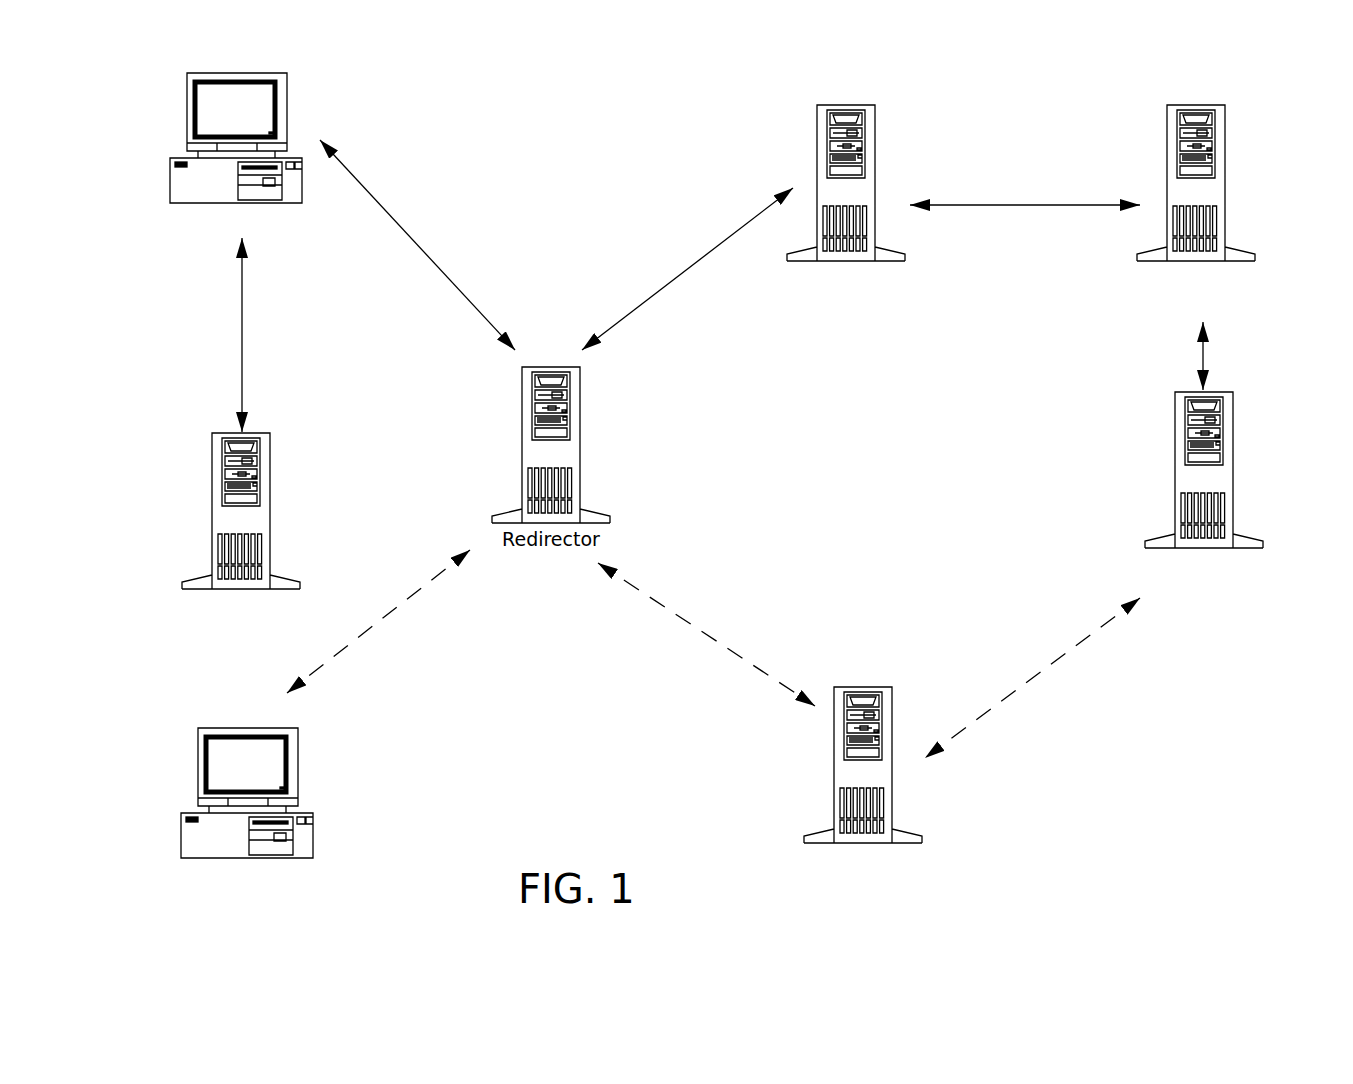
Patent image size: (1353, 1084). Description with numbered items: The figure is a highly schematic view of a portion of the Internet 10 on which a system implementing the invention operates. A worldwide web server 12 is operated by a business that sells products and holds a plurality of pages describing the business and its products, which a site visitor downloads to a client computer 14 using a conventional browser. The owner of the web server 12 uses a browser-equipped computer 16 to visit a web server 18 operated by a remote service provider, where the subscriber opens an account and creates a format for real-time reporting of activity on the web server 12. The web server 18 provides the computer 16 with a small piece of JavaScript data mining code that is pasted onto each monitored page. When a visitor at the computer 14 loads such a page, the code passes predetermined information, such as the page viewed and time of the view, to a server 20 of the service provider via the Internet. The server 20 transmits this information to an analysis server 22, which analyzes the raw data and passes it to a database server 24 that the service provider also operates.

The portion of the Internet 10 is at (549, 150).
The worldwide web server 12 is at (272, 497).
The computer 14 is at (170, 168).
The computer 16 is at (315, 818).
The web server 18 is at (833, 765).
The server 20 is at (877, 150).
The analysis server 22 is at (1163, 185).
The database server 24 is at (1172, 475).